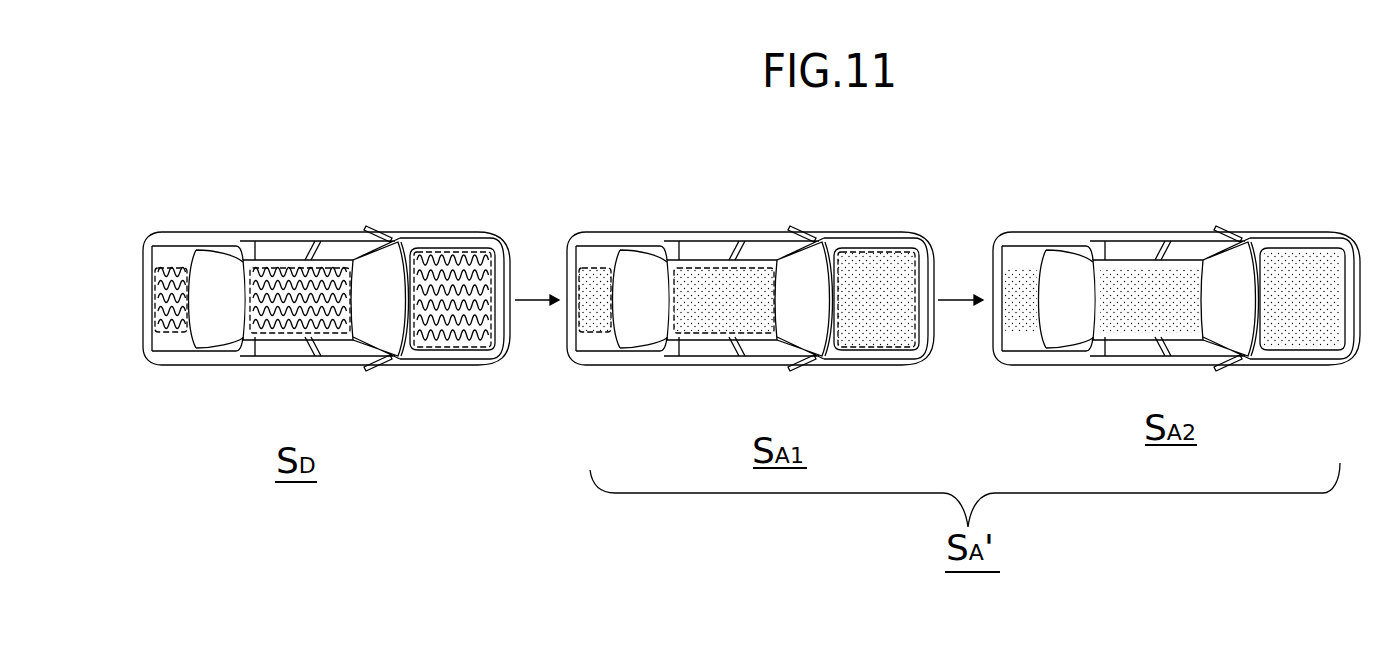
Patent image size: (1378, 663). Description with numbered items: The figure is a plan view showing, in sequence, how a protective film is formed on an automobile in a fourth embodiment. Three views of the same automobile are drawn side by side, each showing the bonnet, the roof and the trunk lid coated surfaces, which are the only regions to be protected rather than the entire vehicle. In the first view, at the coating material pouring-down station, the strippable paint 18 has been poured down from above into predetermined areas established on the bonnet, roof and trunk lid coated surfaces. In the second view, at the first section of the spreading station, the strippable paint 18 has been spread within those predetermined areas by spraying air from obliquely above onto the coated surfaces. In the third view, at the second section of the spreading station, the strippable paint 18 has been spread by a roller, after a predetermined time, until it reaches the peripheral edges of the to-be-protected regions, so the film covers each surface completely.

The strippable paint 18 is at (478, 256).